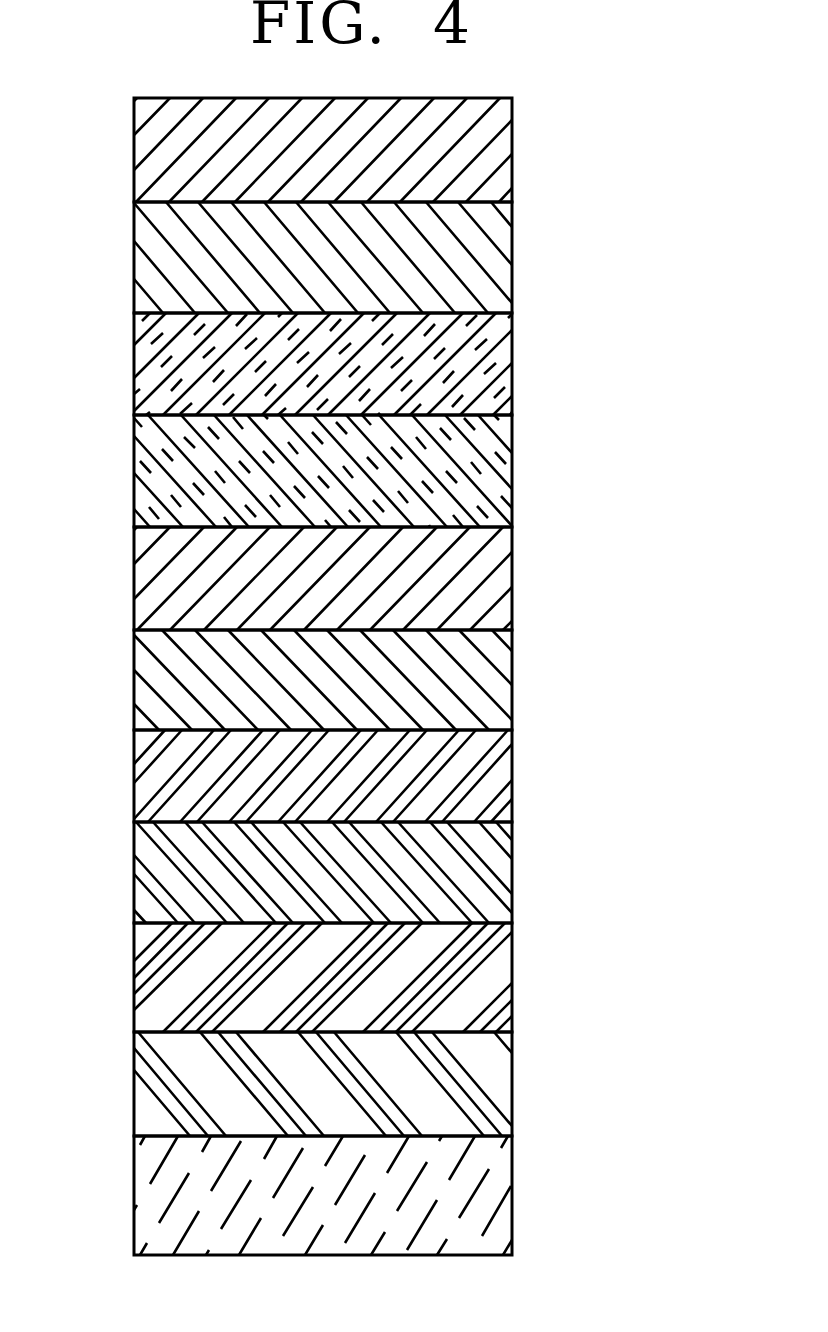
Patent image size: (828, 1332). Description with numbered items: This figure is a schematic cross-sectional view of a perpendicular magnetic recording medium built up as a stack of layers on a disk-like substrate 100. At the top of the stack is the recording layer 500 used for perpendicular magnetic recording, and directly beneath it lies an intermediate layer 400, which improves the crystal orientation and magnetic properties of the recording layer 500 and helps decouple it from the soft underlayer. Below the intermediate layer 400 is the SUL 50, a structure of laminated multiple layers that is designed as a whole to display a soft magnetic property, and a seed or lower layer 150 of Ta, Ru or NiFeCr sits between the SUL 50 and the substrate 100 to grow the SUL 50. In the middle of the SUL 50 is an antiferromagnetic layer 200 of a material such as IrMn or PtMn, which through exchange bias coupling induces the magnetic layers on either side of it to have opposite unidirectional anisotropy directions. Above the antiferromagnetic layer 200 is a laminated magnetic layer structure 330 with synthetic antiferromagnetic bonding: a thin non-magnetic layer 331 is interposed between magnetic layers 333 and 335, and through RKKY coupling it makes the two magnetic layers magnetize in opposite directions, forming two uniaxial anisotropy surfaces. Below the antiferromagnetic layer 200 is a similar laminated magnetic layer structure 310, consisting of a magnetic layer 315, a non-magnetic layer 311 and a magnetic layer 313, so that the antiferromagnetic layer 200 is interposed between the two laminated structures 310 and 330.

The recording layer 500 is at (488, 159).
The intermediate layer 400 is at (488, 266).
The magnetic layer 333 is at (488, 373).
The non-magnetic layer 331 is at (488, 482).
The magnetic layer 335 is at (378, 578).
The laminated magnetic layer structure 330 is at (423, 471).
The antiferromagnetic layer 200 is at (488, 682).
The magnetic layer 313 is at (488, 794).
The non-magnetic layer 311 is at (488, 889).
The magnetic layer 315 is at (378, 977).
The laminated magnetic layer structure 310 is at (423, 881).
The SUL 50 is at (383, 672).
The lower layer 150 is at (488, 1087).
The substrate 100 is at (488, 1197).